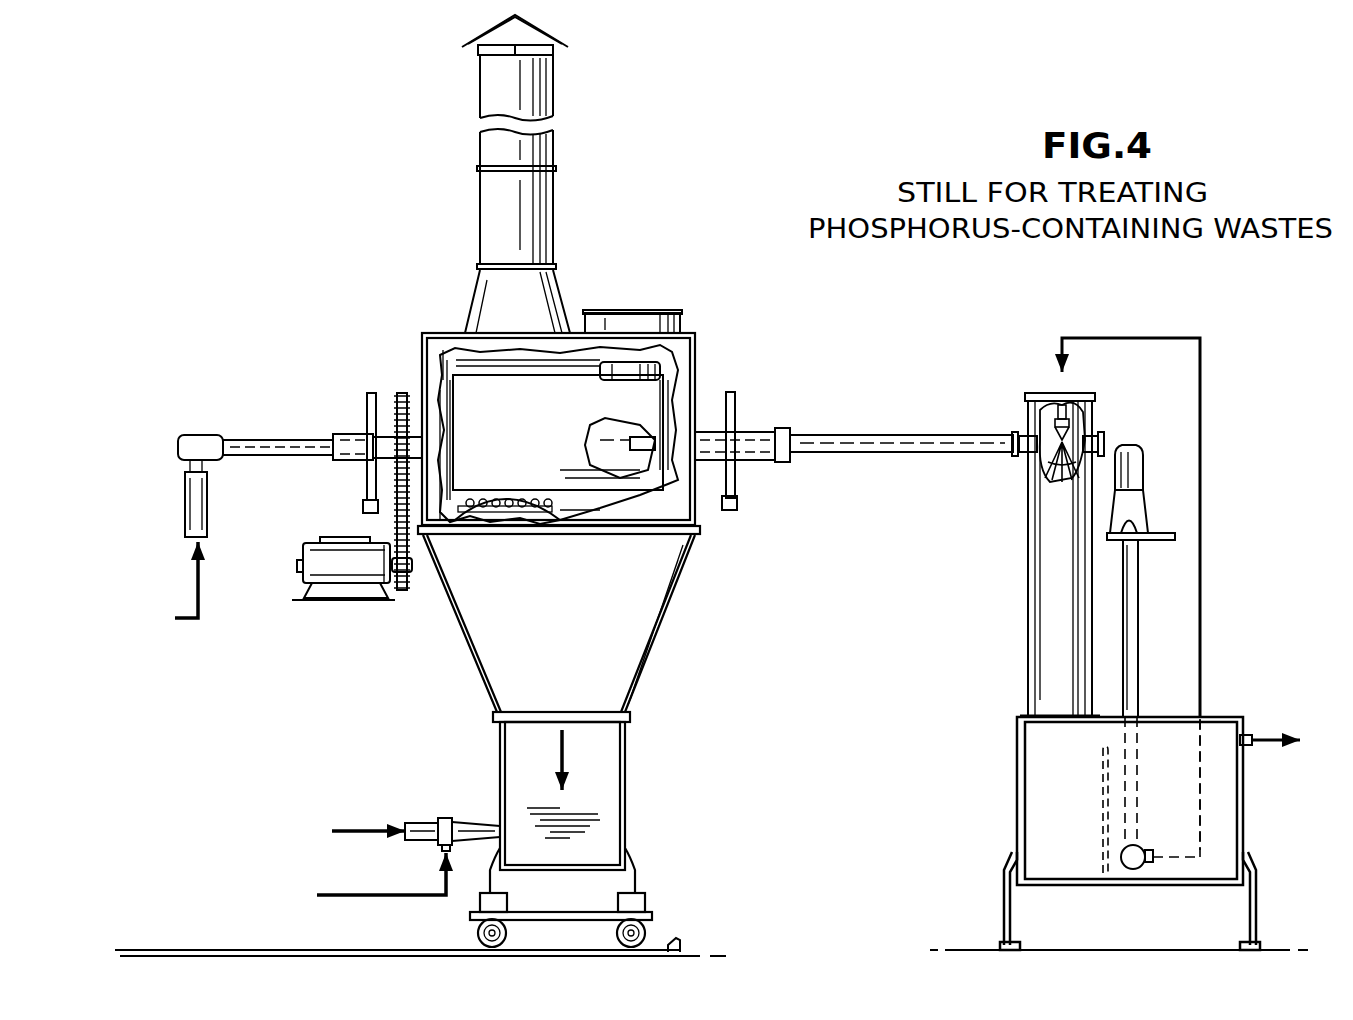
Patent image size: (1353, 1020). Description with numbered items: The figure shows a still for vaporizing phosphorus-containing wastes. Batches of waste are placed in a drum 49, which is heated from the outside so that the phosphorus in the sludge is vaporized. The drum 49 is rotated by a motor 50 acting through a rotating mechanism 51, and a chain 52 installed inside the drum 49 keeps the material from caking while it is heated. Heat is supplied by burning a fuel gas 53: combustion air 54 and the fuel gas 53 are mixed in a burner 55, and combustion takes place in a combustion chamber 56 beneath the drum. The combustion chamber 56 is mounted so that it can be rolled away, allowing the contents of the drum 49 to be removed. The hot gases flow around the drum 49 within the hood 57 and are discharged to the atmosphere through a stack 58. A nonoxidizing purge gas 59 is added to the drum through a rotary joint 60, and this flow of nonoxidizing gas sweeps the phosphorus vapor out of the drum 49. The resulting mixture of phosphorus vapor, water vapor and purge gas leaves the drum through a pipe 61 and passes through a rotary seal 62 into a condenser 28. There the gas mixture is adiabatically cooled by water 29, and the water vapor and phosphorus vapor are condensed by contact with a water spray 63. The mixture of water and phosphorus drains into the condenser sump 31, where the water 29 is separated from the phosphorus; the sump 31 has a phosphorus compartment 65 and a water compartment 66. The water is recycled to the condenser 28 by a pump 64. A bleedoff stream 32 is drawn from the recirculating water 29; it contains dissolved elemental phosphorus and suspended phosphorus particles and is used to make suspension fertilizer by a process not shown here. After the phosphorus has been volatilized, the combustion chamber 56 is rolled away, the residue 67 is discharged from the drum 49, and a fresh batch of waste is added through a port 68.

The condenser 28 is at (1025, 628).
The water 29 is at (1130, 338).
The condenser sump 31 is at (1035, 832).
The bleedoff stream 32 is at (1268, 737).
The drum 49 is at (449, 364).
The motor 50 is at (318, 560).
The rotating mechanism 51 is at (397, 388).
The chain 52 is at (500, 500).
The fuel gas 53 is at (410, 895).
The combustion air 54 is at (378, 829).
The burner 55 is at (473, 821).
The combustion chamber 56 is at (629, 774).
The hood 57 is at (700, 608).
The stack 58 is at (495, 198).
The purge gas 59 is at (222, 607).
The rotary joint 60 is at (180, 440).
The pipe 61 is at (630, 437).
The rotary seal 62 is at (783, 428).
The water spray 63 is at (1050, 458).
The pump 64 is at (1142, 870).
The phosphorus compartment 65 is at (1062, 795).
The water compartment 66 is at (1210, 818).
The residue 67 is at (559, 752).
The port 68 is at (634, 312).